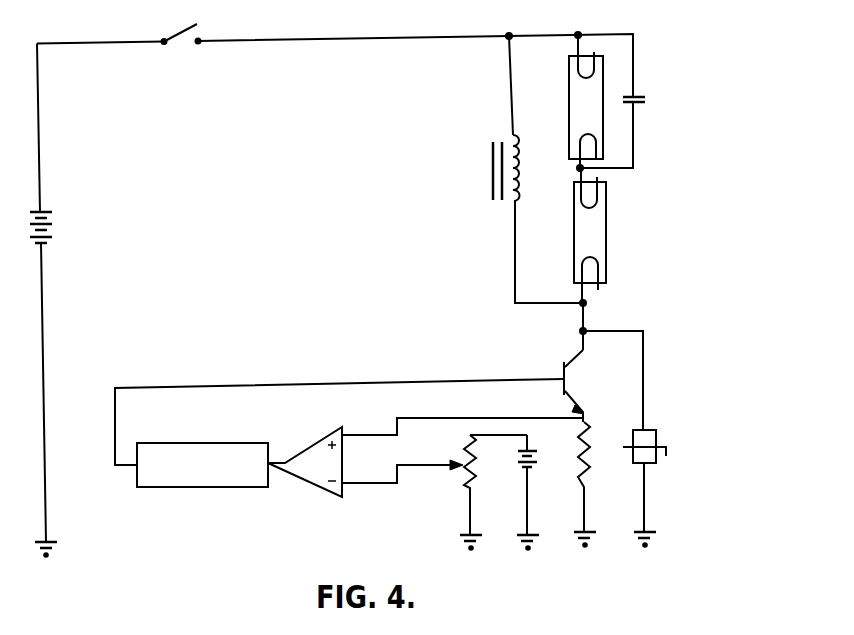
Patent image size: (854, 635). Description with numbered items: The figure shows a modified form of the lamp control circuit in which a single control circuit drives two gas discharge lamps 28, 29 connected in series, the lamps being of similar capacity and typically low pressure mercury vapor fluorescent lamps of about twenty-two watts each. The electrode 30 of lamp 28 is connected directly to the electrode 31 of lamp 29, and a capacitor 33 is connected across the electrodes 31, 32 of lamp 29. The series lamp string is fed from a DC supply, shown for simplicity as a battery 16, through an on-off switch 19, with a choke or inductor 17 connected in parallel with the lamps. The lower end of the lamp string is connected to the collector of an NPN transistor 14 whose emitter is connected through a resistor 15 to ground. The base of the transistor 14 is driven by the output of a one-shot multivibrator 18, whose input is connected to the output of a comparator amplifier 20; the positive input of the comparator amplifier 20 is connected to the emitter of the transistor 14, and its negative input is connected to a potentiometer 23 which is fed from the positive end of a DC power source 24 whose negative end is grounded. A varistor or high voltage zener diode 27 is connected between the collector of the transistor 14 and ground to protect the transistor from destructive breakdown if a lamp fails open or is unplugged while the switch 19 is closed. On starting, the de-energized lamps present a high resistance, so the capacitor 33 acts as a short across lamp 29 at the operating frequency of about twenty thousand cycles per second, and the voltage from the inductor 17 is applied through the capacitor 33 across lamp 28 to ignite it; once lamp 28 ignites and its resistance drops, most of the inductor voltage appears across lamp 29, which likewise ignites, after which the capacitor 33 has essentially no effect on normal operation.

The NPN transistor 14 is at (563, 372).
The resistor 15 is at (575, 440).
The battery 16 is at (55, 222).
The inductor 17 is at (490, 180).
The one-shot multivibrator 18 is at (218, 488).
The on-off switch 19 is at (176, 34).
The comparator amplifier 20 is at (318, 490).
The potentiometer 23 is at (465, 489).
The DC power source 24 is at (520, 470).
The varistor 27 is at (656, 430).
The first gas discharge lamp 28 is at (603, 86).
The second gas discharge lamp 29 is at (607, 243).
The electrode of lamp 28 30 is at (597, 148).
The electrode of lamp 29 31 is at (605, 194).
The electrode of lamp 29 32 is at (607, 274).
The capacitor 33 is at (648, 100).